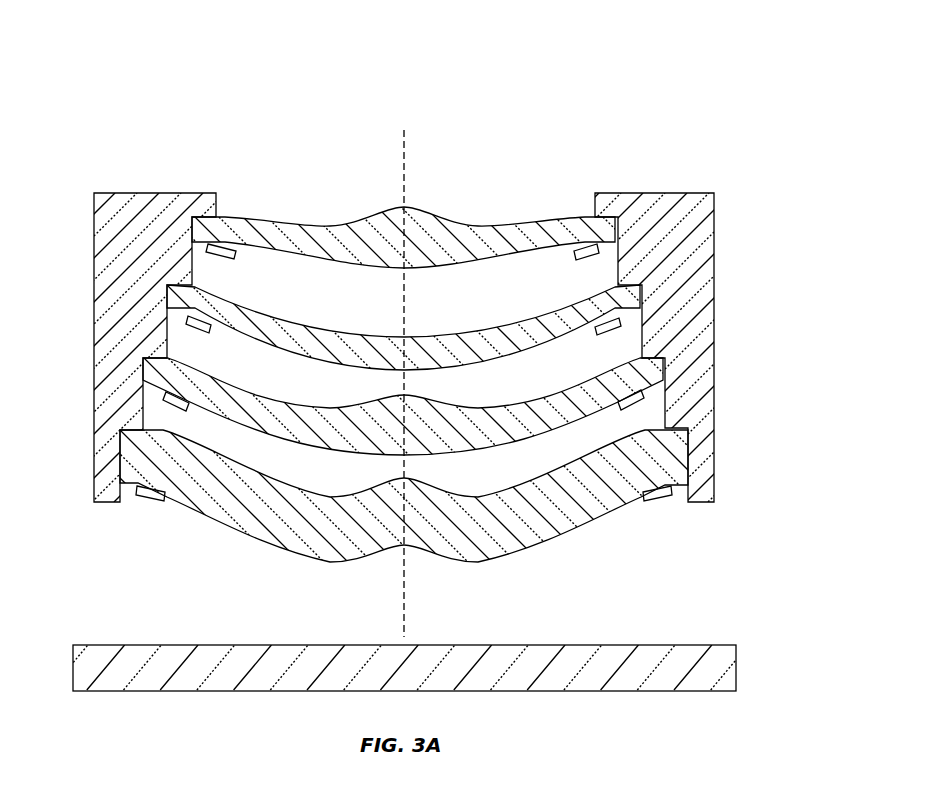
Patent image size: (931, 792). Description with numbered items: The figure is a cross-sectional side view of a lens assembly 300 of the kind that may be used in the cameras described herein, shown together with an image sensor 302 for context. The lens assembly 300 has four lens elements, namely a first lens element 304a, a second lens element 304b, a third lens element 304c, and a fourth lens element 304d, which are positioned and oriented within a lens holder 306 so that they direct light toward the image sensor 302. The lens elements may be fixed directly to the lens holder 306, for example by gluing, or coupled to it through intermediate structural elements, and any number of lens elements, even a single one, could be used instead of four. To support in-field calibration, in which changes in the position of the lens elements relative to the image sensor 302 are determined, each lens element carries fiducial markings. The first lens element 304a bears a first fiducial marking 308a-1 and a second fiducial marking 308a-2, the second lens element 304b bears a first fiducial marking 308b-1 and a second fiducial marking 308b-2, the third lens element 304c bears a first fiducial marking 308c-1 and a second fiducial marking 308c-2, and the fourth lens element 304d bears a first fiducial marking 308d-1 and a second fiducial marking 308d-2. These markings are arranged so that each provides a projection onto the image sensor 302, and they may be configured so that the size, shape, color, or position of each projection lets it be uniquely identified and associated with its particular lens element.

The lens assembly 300 is at (168, 103).
The image sensor 302 is at (736, 660).
The first lens element 304a is at (325, 222).
The second lens element 304b is at (462, 334).
The third lens element 304c is at (282, 406).
The fourth lens element 304d is at (540, 548).
The lens holder 306 is at (716, 207).
The first fiducial marking 308a-1 is at (207, 250).
The second fiducial marking 308a-2 is at (599, 254).
The first fiducial marking 308b-1 is at (188, 325).
The second fiducial marking 308b-2 is at (620, 328).
The first fiducial marking 308c-1 is at (166, 400).
The second fiducial marking 308c-2 is at (643, 400).
The first fiducial marking 308d-1 is at (148, 502).
The second fiducial marking 308d-2 is at (658, 502).